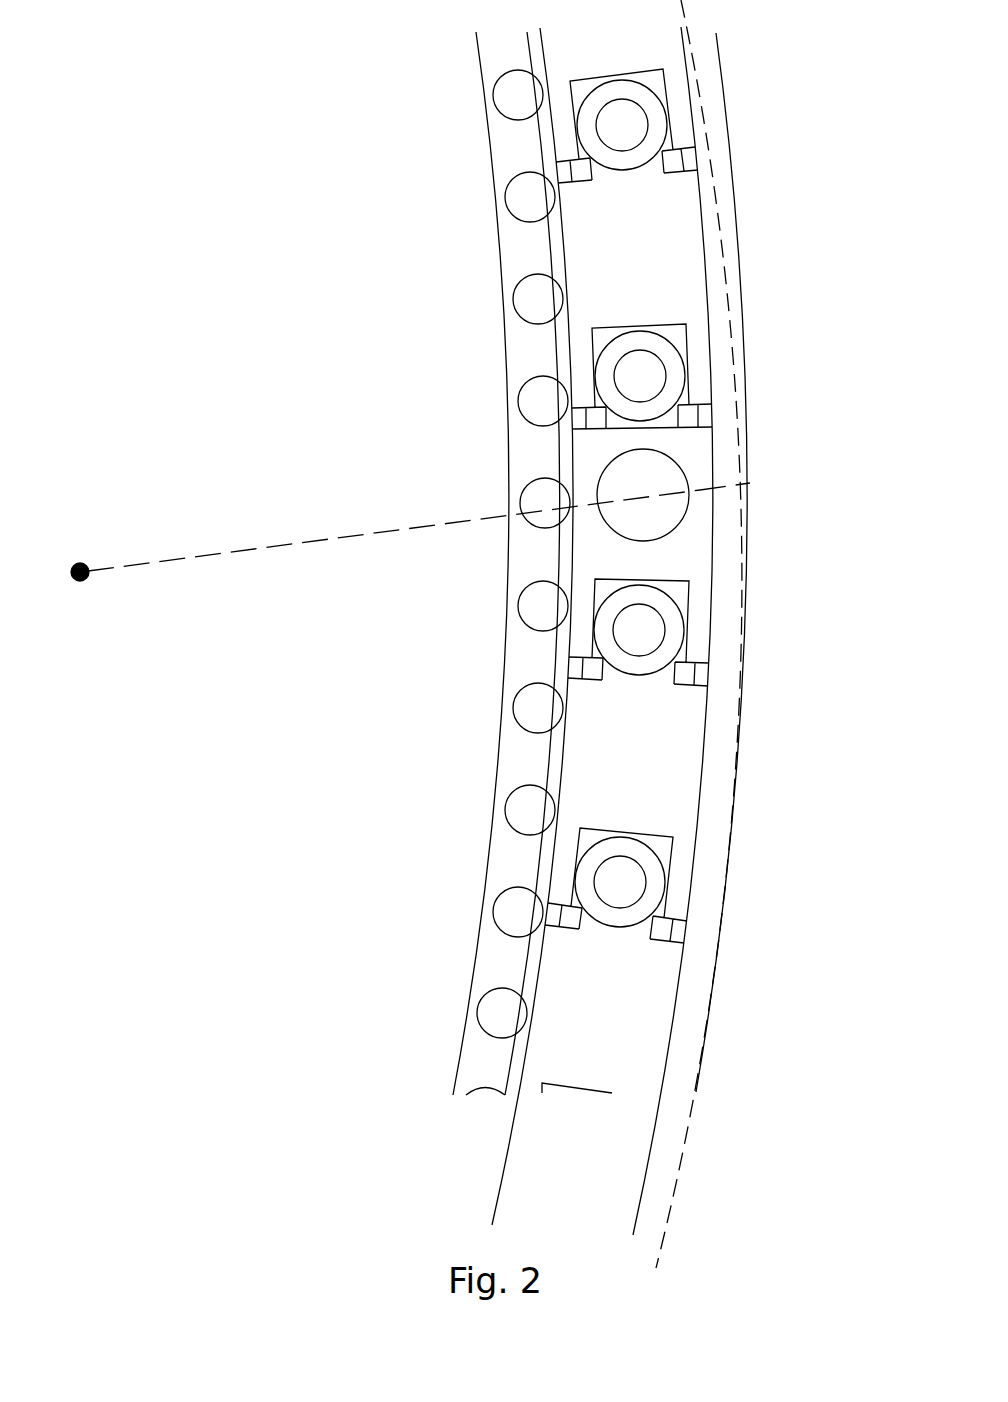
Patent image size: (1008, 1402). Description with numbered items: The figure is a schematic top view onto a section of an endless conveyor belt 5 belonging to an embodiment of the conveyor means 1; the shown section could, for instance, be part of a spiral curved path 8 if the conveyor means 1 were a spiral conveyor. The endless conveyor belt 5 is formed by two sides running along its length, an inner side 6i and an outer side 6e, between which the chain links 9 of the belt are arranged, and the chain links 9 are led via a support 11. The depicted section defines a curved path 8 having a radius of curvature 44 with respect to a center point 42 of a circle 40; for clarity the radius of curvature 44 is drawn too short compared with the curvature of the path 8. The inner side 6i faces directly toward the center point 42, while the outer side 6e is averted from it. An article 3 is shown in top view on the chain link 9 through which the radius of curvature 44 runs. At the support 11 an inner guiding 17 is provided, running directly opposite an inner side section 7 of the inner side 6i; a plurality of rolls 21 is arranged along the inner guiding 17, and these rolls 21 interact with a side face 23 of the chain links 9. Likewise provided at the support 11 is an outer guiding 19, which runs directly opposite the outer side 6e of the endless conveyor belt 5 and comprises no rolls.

The conveyor means 1 is at (362, 362).
The article 3 is at (634, 490).
The endless conveyor belt 5 is at (700, 197).
The inner side 6i is at (502, 1162).
The outer side 6e is at (648, 1162).
The inner side section 7 is at (573, 321).
The curved path 8 is at (682, 1153).
The chain links 9 is at (636, 781).
The support 11 is at (488, 160).
The inner guiding 17 is at (522, 253).
The outer guiding 19 is at (713, 413).
The rolls 21 is at (505, 93).
The side face 23 is at (566, 242).
The circle 40 is at (748, 483).
The center point 42 is at (80, 562).
The radius of curvature 44 is at (318, 546).